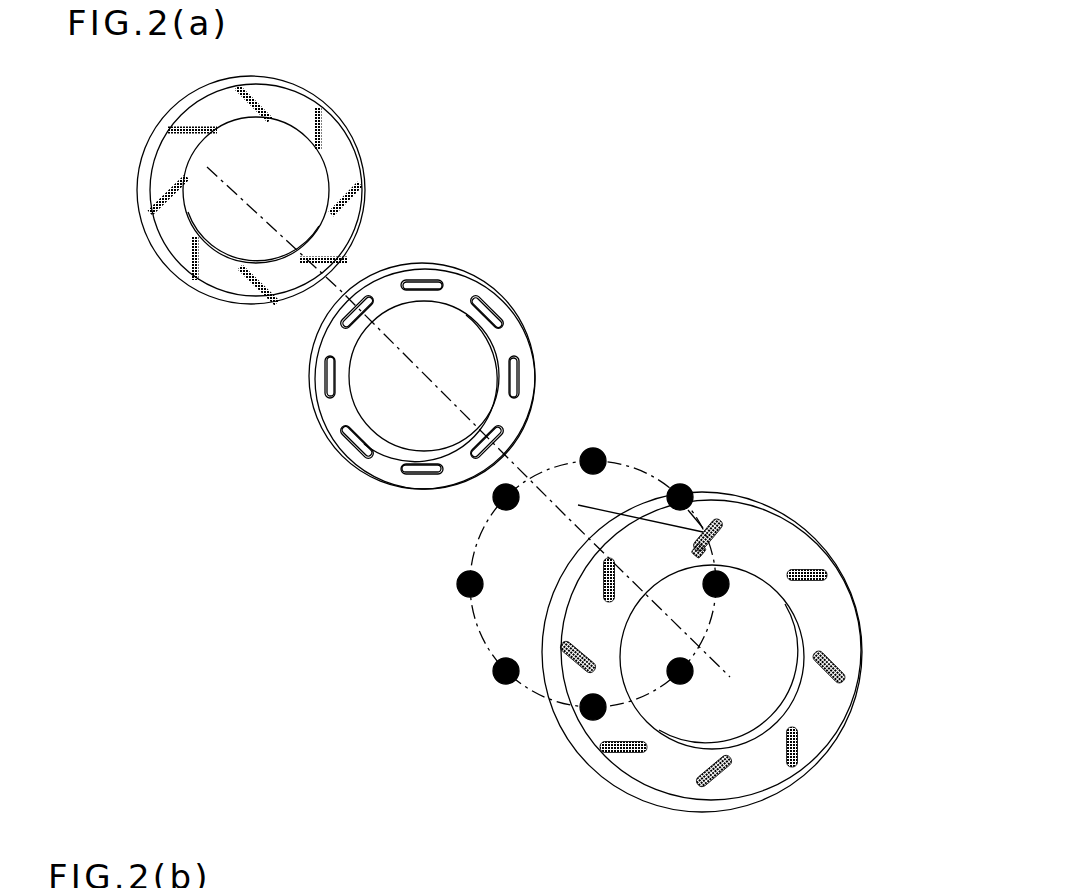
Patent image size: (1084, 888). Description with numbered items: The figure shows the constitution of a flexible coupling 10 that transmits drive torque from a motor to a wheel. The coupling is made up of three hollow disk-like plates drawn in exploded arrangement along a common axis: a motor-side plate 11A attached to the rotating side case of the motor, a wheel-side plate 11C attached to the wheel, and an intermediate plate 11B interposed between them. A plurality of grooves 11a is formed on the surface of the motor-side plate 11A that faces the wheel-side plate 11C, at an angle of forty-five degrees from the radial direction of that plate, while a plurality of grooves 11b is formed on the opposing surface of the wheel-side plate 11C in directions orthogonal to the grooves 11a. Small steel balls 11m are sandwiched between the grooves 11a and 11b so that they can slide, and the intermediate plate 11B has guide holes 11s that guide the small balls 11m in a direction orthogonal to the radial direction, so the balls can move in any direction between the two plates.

The flexible coupling 10 is at (546, 190).
The wheel-side plate 11C is at (293, 108).
The grooves 11b is at (321, 127).
The intermediate plate 11B is at (462, 292).
The guide holes 11s is at (520, 368).
The small steel balls 11m is at (591, 450).
The motor-side plate 11A is at (767, 528).
The grooves 11a is at (577, 660).